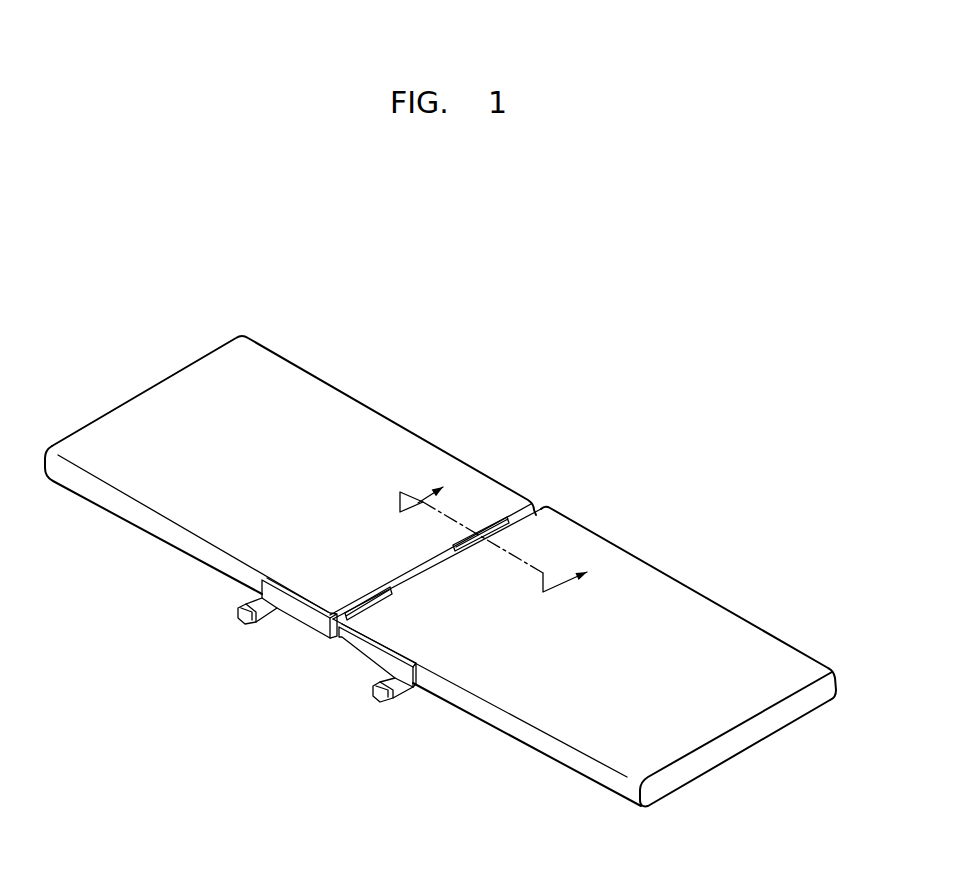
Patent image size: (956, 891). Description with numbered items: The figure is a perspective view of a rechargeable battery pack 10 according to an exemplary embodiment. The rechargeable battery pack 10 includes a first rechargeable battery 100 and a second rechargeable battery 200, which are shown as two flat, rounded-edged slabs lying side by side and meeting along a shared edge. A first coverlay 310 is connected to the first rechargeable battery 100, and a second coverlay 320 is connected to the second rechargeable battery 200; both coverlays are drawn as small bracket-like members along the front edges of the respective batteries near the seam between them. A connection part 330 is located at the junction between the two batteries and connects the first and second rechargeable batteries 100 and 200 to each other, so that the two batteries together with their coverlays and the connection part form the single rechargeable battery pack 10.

The rechargeable battery pack 10 is at (653, 385).
The first rechargeable battery 100 is at (352, 390).
The second rechargeable battery 200 is at (668, 567).
The first coverlay 310 is at (300, 617).
The second coverlay 320 is at (372, 650).
The connection part 330 is at (490, 530).